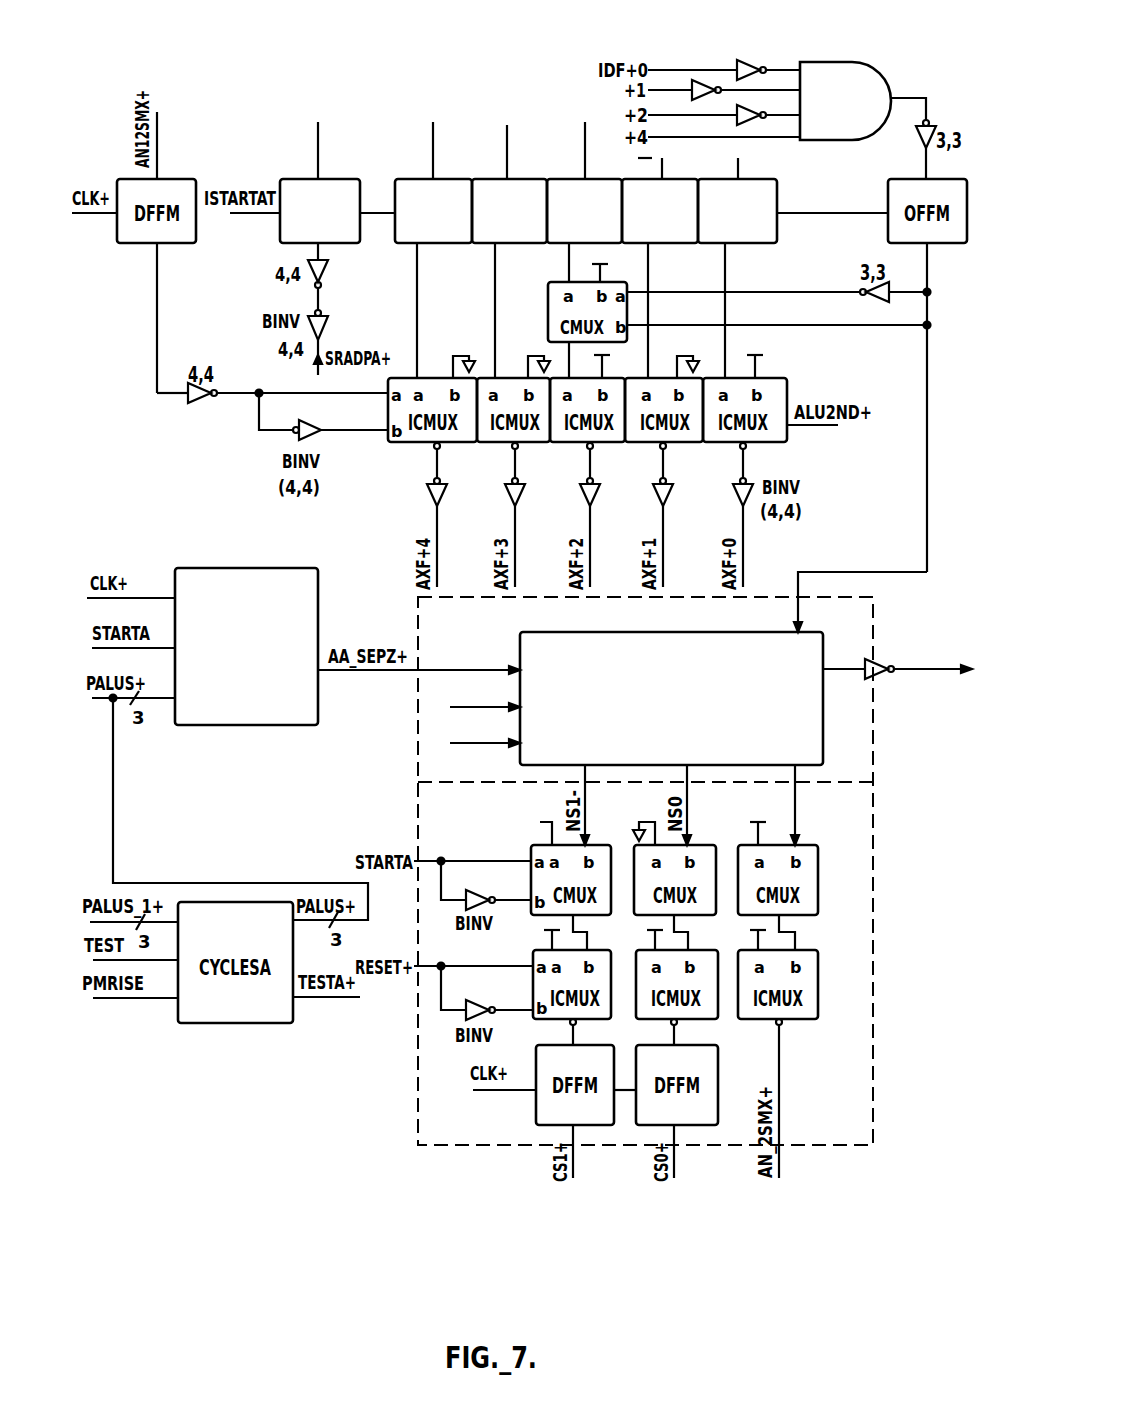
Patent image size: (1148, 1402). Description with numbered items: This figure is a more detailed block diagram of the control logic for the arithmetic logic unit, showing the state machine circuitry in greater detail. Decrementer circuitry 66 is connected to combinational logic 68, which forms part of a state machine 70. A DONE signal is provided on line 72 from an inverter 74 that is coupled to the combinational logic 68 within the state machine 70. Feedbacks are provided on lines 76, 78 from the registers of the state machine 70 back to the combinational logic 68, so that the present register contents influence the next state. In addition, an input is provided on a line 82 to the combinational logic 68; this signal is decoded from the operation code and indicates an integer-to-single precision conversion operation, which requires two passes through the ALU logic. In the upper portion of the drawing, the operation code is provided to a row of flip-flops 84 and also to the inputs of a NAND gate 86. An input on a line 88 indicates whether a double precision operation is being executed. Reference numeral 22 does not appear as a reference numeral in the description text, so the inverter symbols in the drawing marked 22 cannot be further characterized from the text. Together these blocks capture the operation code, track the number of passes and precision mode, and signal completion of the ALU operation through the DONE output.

The inverters 22 is at (741, 77).
The decrementer circuitry 66 is at (287, 568).
The combinational logic 68 is at (709, 632).
The state machine 70 is at (873, 835).
The line 72 is at (918, 675).
The inverter 74 is at (878, 676).
The line 76 is at (452, 743).
The line 78 is at (452, 707).
The line 82 is at (843, 587).
The flip-flops 84 is at (438, 179).
The NAND gate 86 is at (879, 73).
The line 88 is at (318, 157).